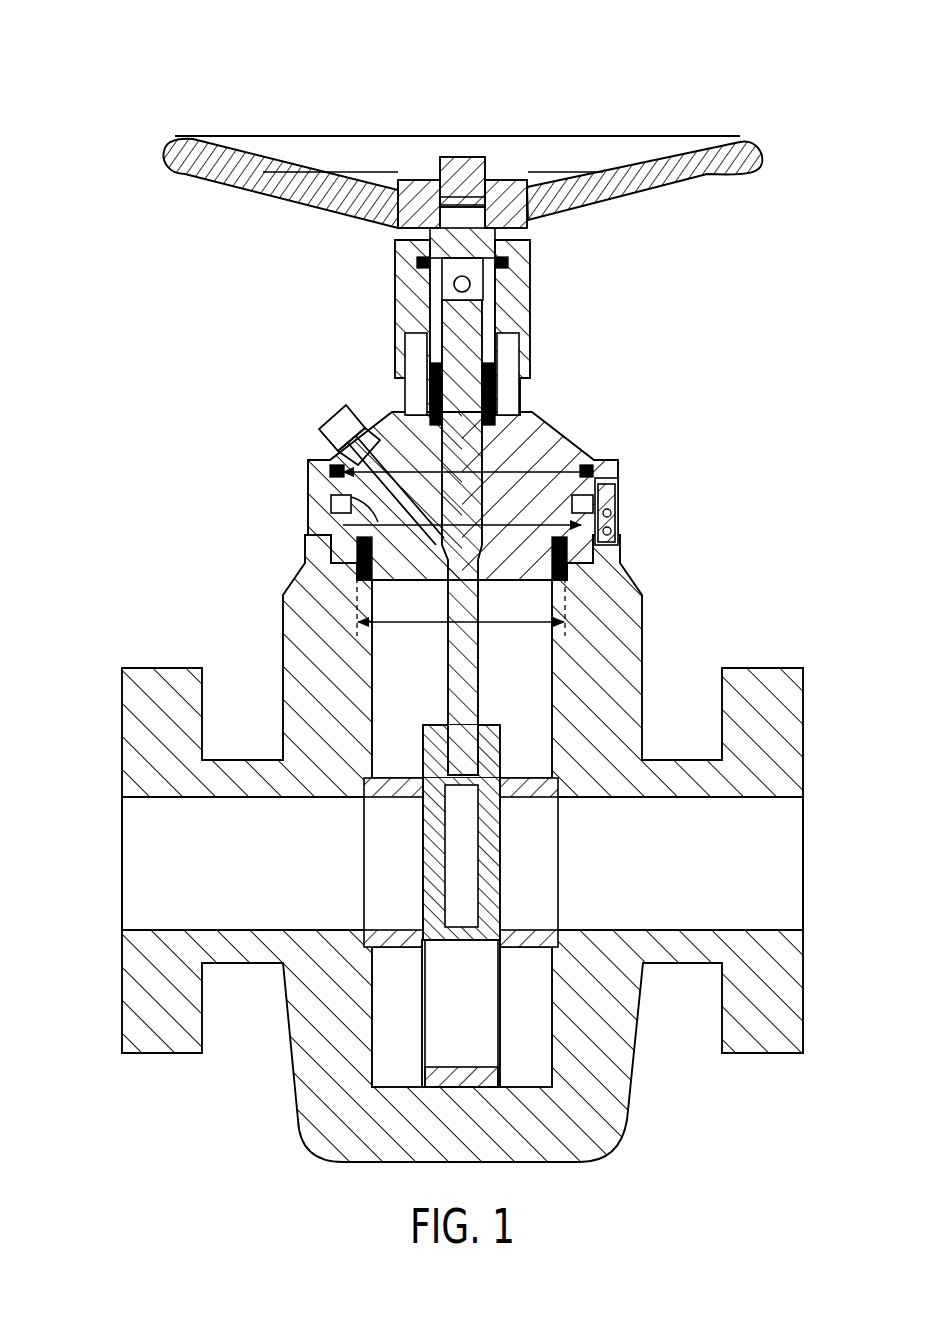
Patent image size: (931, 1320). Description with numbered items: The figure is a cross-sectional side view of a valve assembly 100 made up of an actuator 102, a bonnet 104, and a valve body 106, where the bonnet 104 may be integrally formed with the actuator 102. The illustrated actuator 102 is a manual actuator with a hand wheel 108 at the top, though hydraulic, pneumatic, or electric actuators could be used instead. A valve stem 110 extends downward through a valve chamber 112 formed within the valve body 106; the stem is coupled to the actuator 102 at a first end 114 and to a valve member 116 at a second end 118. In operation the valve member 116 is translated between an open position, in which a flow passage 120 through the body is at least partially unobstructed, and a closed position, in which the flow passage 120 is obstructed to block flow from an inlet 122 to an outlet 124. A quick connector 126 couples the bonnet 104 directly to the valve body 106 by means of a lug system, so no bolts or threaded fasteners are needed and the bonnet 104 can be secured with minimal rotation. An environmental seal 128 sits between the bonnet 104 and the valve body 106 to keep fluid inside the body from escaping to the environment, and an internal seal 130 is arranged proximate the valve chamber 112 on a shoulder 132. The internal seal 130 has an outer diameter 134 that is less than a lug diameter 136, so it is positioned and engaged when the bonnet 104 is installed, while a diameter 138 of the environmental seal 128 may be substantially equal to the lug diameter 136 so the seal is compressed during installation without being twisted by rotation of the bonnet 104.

The valve assembly 100 is at (729, 69).
The actuator 102 is at (758, 142).
The bonnet 104 is at (566, 452).
The valve body 106 is at (645, 609).
The hand wheel 108 is at (399, 214).
The valve stem 110 is at (458, 668).
The valve chamber 112 is at (578, 590).
The first end 114 is at (368, 300).
The valve member 116 is at (505, 861).
The second end 118 is at (390, 812).
The flow passage 120 is at (158, 876).
The inlet 122 is at (96, 868).
The outlet 124 is at (806, 868).
The quick connector 126 is at (631, 488).
The environmental seal 128 is at (598, 440).
The internal seal 130 is at (348, 583).
The shoulder 132 is at (362, 584).
The outer diameter 134 is at (507, 628).
The lug diameter 136 is at (340, 500).
The diameter 138 is at (408, 470).